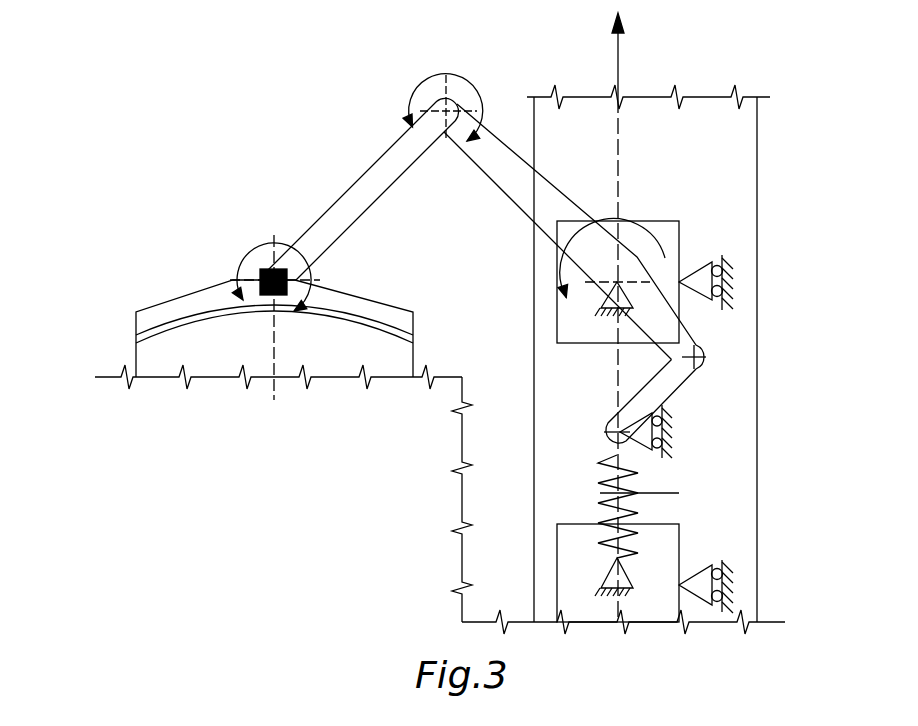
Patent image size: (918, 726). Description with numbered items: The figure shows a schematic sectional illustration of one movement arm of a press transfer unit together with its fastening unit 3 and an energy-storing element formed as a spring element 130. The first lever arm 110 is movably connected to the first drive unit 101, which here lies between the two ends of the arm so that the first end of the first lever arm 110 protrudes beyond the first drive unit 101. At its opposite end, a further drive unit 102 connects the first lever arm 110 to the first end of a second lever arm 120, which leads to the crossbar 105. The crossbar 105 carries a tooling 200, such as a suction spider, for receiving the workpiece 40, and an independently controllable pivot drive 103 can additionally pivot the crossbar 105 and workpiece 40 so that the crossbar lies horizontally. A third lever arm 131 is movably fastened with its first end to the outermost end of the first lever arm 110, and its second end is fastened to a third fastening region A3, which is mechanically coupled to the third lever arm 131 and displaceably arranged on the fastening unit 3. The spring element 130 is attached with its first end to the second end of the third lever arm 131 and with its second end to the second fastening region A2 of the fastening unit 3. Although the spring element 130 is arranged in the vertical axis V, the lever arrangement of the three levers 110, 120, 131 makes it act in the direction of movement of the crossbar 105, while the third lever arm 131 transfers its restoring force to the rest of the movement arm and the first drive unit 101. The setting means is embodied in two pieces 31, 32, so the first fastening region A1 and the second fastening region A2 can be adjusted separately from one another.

The fastening unit 3 is at (740, 197).
The setting means piece 31 is at (663, 553).
The setting means piece 32 is at (662, 257).
The workpiece 40 is at (145, 328).
The first drive unit 101 is at (567, 272).
The further drive unit 102 is at (410, 100).
The pivot drive 103 is at (243, 265).
The crossbar 105 is at (260, 268).
The first lever arm 110 is at (543, 207).
The second lever arm 120 is at (345, 200).
The spring element 130 is at (600, 490).
The third lever arm 131 is at (643, 403).
The tooling 200 is at (157, 322).
The first fastening region A1 is at (617, 283).
The second fastening region A2 is at (622, 586).
The third fastening region A3 is at (623, 440).
The vertical axis V is at (632, 316).